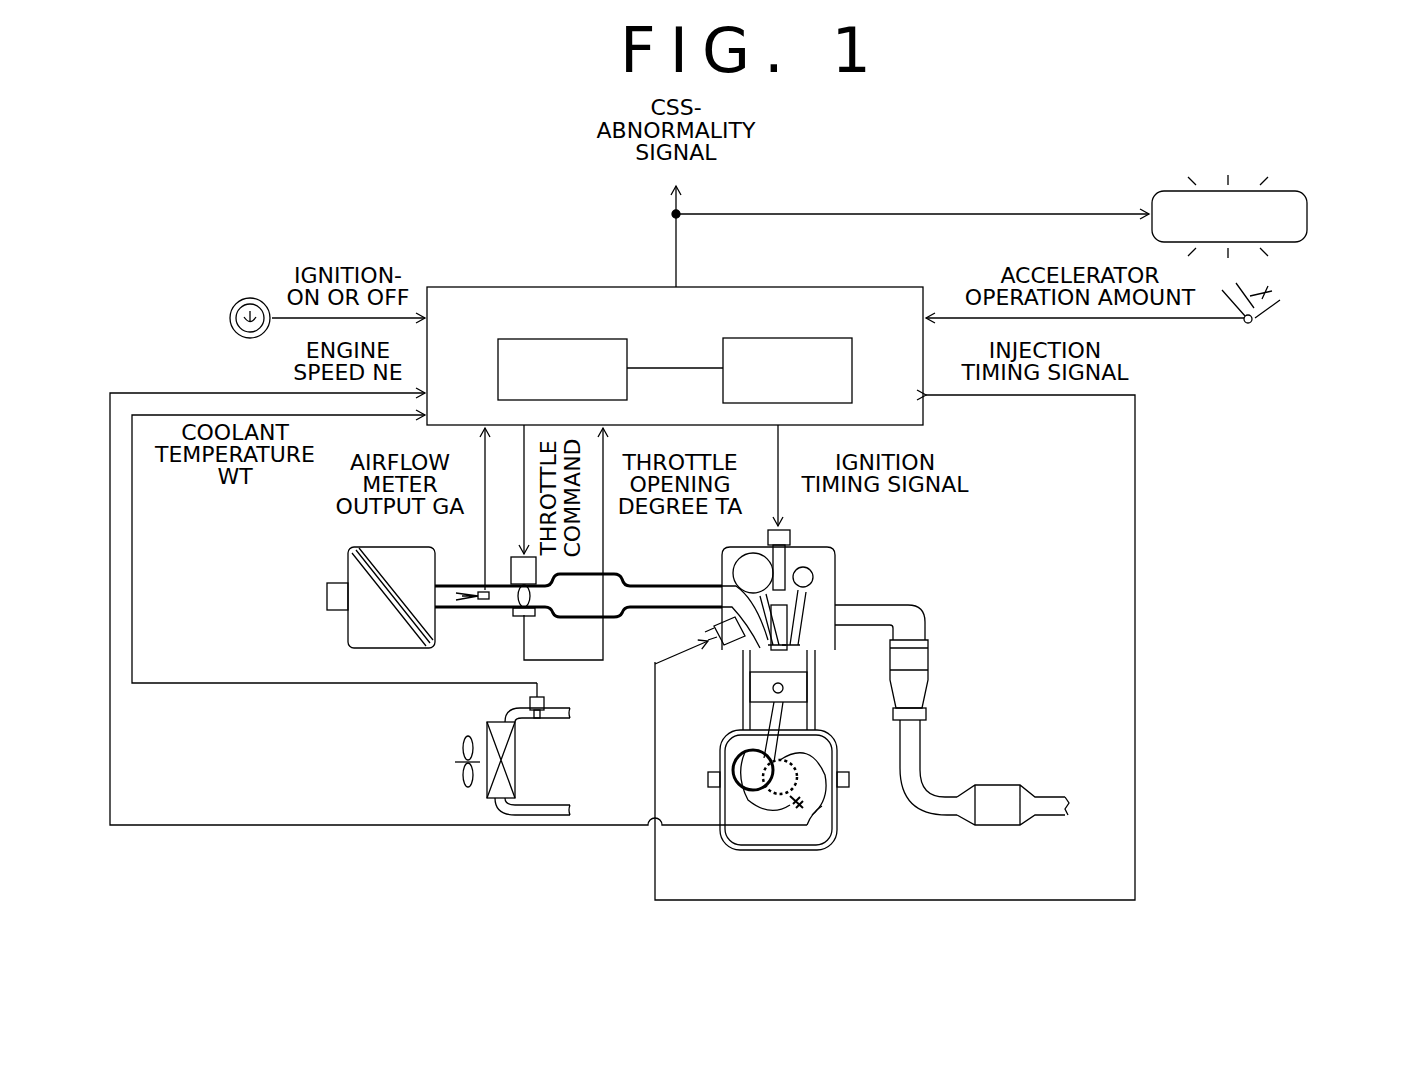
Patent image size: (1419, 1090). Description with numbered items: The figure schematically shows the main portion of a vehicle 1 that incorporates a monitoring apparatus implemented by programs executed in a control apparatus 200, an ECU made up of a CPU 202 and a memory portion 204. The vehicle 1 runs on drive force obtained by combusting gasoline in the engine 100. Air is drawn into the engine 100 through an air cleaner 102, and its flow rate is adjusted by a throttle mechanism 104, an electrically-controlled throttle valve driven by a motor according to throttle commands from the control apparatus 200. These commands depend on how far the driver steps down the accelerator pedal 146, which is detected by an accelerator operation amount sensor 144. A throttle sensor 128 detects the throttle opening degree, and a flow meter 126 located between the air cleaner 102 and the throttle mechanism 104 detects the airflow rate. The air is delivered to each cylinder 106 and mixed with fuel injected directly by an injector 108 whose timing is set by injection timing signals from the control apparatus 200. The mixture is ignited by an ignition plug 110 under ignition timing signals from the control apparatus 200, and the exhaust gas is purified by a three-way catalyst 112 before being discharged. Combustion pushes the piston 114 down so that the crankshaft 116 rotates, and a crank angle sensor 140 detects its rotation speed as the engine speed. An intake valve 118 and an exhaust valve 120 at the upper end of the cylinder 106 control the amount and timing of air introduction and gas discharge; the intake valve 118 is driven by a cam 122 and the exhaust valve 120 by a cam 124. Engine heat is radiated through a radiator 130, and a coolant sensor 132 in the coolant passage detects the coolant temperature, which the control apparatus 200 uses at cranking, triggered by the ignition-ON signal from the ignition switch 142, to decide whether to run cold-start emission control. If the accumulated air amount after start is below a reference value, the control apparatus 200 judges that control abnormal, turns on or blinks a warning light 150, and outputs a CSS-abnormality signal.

The vehicle 1 is at (1407, 136).
The engine 100 is at (898, 570).
The air cleaner 102 is at (388, 548).
The throttle mechanism 104 is at (532, 607).
The cylinder 106 is at (748, 682).
The injector 108 is at (712, 630).
The ignition plug 110 is at (792, 535).
The three-way catalyst 112 is at (932, 660).
The piston 114 is at (750, 712).
The crankshaft 116 is at (826, 818).
The intake valve 118 is at (722, 572).
The exhaust valve 120 is at (820, 632).
The cam 122 is at (745, 556).
The cam 124 is at (822, 572).
The flow meter 126 is at (484, 606).
The throttle sensor 128 is at (516, 617).
The radiator 130 is at (466, 723).
The coolant sensor 132 is at (546, 702).
The crank angle sensor 140 is at (807, 802).
The ignition switch 142 is at (255, 296).
The accelerator operation amount sensor 144 is at (1251, 323).
The accelerator pedal 146 is at (1257, 279).
The warning light 150 is at (1310, 217).
The control apparatus 200 is at (858, 262).
The CPU 202 is at (602, 340).
The memory portion 204 is at (824, 340).